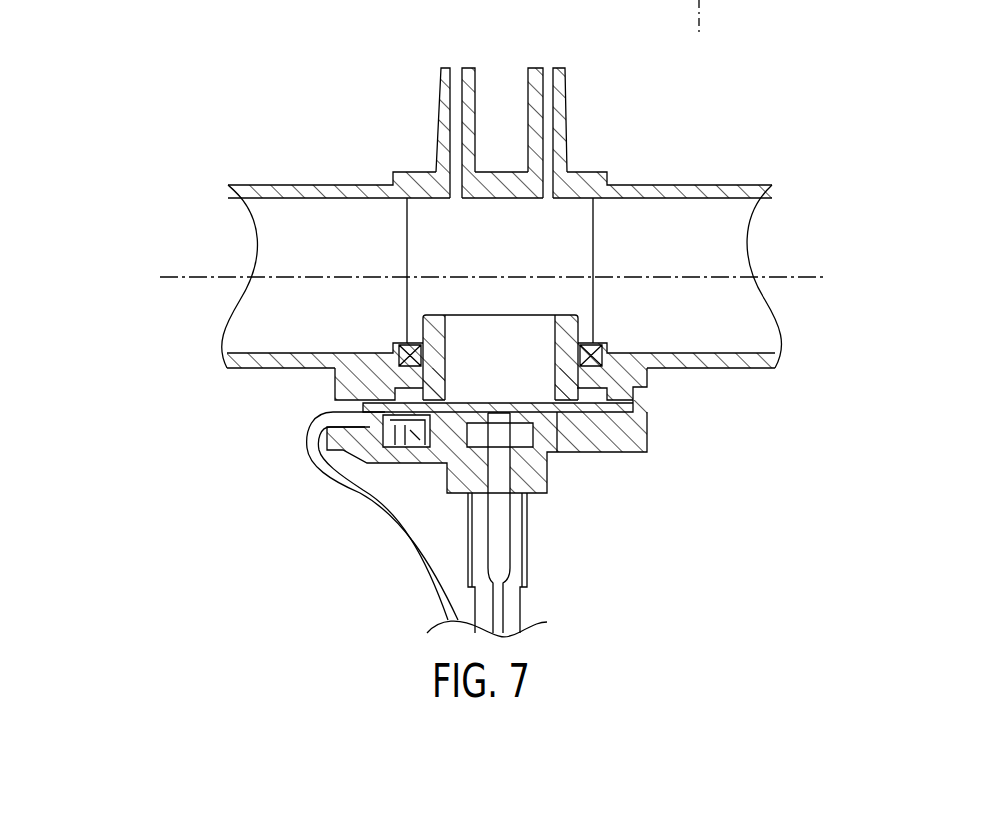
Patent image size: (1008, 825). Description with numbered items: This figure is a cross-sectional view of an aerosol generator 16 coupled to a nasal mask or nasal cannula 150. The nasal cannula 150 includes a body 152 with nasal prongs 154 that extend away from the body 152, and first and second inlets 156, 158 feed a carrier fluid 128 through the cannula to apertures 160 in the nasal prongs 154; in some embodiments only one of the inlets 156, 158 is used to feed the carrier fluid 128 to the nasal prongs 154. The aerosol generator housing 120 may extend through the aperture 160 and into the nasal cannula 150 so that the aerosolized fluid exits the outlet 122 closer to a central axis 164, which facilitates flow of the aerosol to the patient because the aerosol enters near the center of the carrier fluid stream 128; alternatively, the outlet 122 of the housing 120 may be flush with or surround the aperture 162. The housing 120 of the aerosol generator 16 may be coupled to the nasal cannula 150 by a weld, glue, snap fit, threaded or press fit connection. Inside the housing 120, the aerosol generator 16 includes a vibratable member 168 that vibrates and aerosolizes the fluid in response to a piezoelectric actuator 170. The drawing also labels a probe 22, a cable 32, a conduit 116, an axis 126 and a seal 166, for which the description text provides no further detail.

The aerosol generator 16 is at (338, 544).
The sensor probe 22 is at (518, 553).
The cable 32 is at (428, 572).
The conduit 116 is at (807, 0).
The aerosol generator housing 120 is at (281, 399).
The outlet 122 is at (578, 317).
The axis 126 is at (700, 18).
The carrier fluid 128 is at (228, 258).
The nasal cannula 150 is at (205, 132).
The body 152 is at (303, 192).
The nasal prongs 154 is at (448, 114).
The first inlet 156 is at (252, 227).
The second inlet 158 is at (747, 225).
The apertures 160 is at (543, 72).
The aperture 162 is at (422, 342).
The central axis 164 is at (782, 276).
The seal 166 is at (407, 345).
The vibratable member 168 is at (503, 412).
The piezoelectric actuator 170 is at (428, 440).